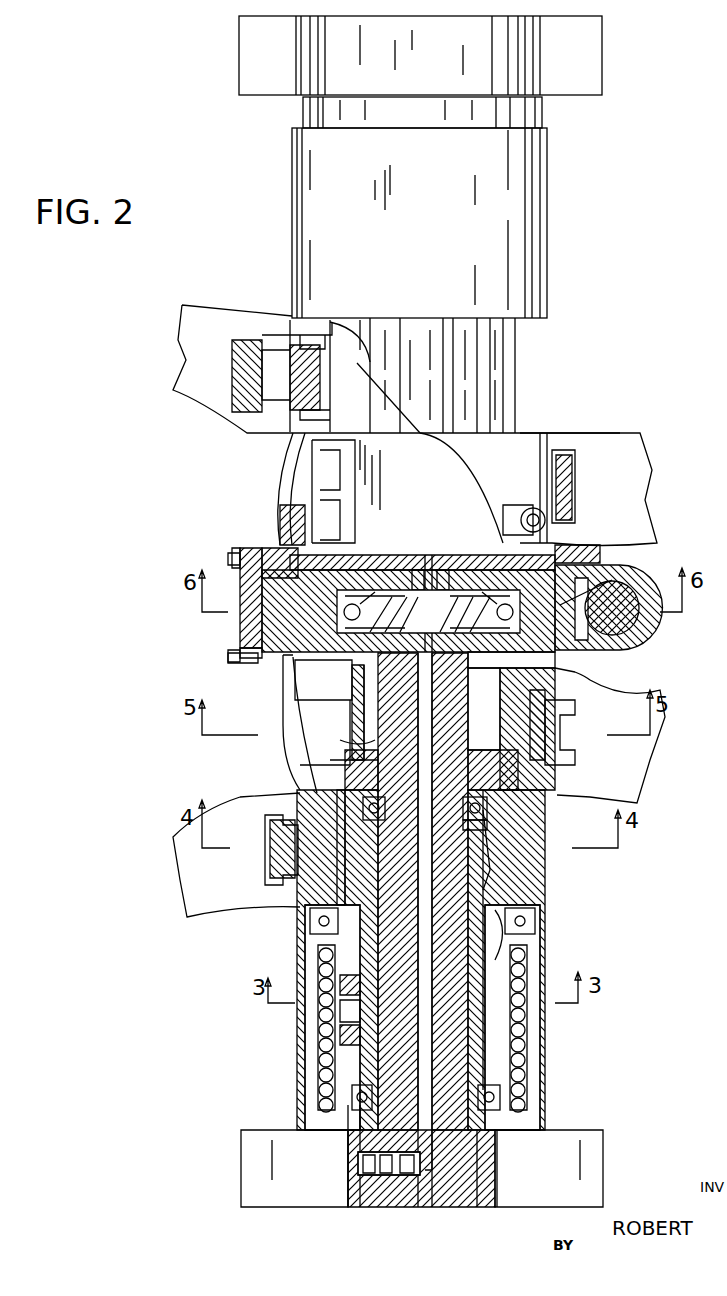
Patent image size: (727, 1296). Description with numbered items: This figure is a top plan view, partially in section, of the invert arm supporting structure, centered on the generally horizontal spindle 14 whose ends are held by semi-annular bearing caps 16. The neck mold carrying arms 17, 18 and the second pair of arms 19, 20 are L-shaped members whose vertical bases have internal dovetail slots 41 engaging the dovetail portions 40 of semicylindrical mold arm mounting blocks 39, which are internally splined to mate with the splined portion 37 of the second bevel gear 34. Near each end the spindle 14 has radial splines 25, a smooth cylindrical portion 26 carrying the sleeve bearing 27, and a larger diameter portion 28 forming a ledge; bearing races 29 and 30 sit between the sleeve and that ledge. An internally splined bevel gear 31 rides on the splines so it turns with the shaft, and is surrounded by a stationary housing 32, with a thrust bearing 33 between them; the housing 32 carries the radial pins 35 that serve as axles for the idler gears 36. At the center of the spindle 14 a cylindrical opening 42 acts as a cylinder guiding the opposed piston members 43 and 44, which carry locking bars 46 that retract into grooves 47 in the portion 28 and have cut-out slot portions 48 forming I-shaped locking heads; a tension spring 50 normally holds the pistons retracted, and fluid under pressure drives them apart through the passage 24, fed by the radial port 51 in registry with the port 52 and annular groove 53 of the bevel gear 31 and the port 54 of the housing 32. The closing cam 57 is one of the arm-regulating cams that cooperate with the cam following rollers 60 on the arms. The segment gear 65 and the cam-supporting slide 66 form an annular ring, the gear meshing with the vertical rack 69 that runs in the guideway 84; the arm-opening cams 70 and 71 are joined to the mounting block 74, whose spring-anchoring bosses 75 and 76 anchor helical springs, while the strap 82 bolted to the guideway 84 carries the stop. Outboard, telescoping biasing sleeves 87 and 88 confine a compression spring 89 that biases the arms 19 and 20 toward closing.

The spindle 14 is at (445, 1190).
The bearing cap 16 is at (513, 65).
The neck mold carrying arm 17 is at (648, 735).
The neck mold carrying arm 18 is at (622, 430).
The neck mold arm 19 is at (205, 905).
The neck mold arm 20 is at (220, 305).
The passage 24 is at (455, 1185).
The radial splines 25 is at (470, 1140).
The cylindrical portion 26 is at (510, 1030).
The sleeve bearing 27 is at (470, 870).
The larger diameter portion 28 is at (345, 780).
The bearing race 29 is at (470, 805).
The bearing race 30 is at (490, 808).
The bevel gear 31 is at (500, 1160).
The housing 32 is at (530, 1092).
The thrust bearing 33 is at (352, 1132).
The second bevel gear 34 is at (480, 898).
The pin 35 is at (320, 1020).
The idler gear 36 is at (335, 1045).
The splined portion 37 is at (512, 885).
The mold arm mounting block 39 is at (575, 682).
The dovetail portion 40 is at (560, 745).
The dovetail slot 41 is at (540, 730).
The cylindrical opening 42 is at (442, 560).
The piston member 43 is at (330, 638).
The piston member 44 is at (565, 573).
The locking bar 46 is at (365, 745).
The groove 47 is at (352, 762).
The cut-out slot portion 48 is at (352, 705).
The tension spring 50 is at (428, 560).
The radial port 51 is at (398, 1178).
The port 52 is at (425, 1178).
The annular groove 53 is at (382, 1176).
The port 54 is at (366, 1176).
The cam member 57 is at (442, 505).
The cam following roller 60 is at (510, 500).
The segment gear 65 is at (585, 612).
The cam-supporting slide 66 is at (290, 556).
The rack 69 is at (612, 580).
The arm-opening cam member 70 is at (290, 762).
The arm-opening cam member 71 is at (292, 455).
The mounting block 74 is at (258, 655).
The spring-anchoring boss 75 is at (240, 660).
The spring-anchoring boss 76 is at (240, 548).
The strap 82 is at (232, 555).
The guideway 84 is at (638, 628).
The biasing sleeve 87 is at (515, 117).
The biasing sleeve 88 is at (545, 218).
The compression spring 89 is at (535, 950).